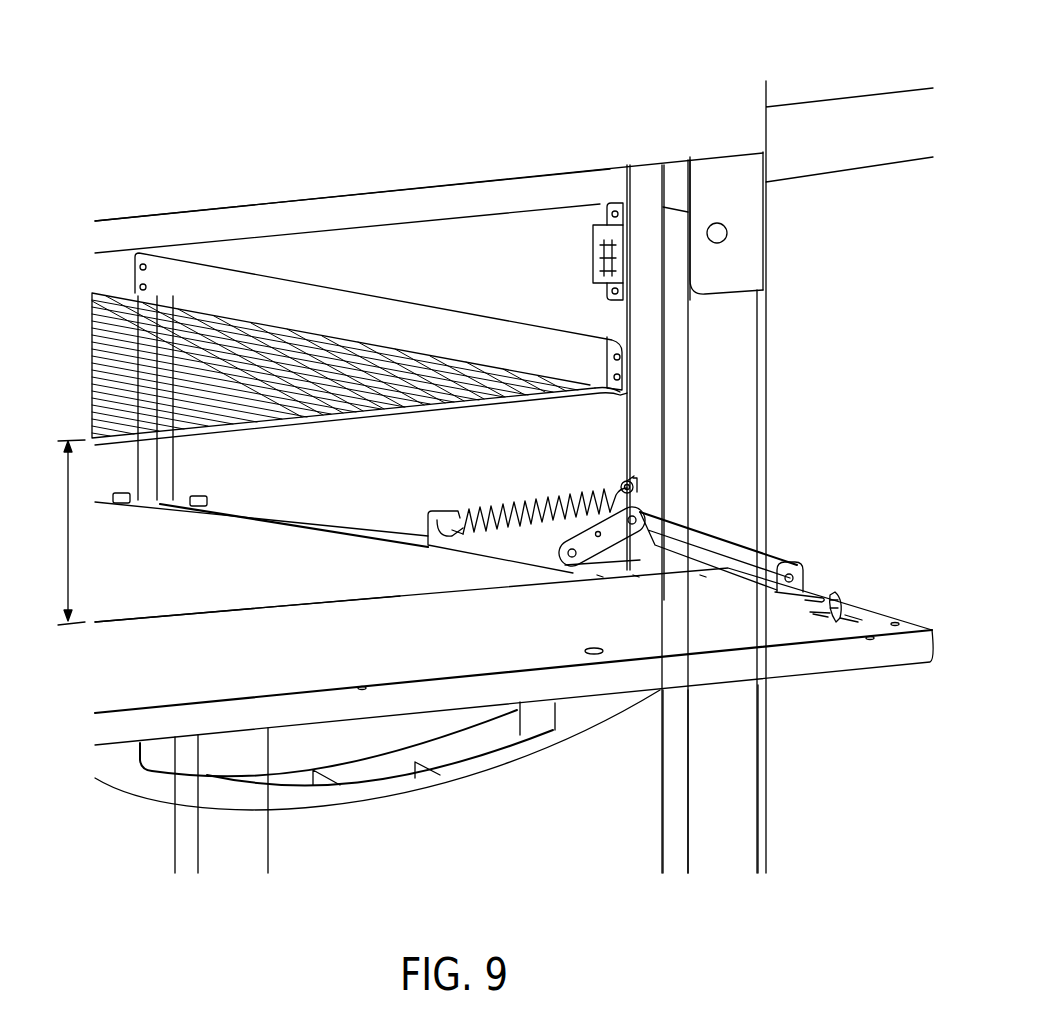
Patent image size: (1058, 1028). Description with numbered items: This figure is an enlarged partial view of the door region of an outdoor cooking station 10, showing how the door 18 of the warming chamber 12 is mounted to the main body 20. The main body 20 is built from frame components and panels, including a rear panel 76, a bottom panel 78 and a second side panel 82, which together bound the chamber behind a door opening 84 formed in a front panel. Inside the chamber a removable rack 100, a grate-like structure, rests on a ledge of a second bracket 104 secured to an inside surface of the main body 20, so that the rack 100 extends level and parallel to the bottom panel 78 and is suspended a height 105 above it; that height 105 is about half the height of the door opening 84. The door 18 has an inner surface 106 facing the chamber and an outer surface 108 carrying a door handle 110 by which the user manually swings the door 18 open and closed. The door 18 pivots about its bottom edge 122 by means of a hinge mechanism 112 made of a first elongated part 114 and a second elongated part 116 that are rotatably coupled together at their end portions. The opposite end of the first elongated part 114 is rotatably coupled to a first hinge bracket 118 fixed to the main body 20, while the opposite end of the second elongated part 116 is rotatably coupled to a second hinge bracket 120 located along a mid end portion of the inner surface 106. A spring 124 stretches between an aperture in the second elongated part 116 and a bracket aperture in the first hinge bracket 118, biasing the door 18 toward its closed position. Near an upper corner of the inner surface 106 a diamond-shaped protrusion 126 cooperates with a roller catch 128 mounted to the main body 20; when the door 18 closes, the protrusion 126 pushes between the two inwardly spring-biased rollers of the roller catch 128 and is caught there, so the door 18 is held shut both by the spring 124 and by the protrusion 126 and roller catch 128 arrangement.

The outdoor cooking station 10 is at (781, 52).
The warming chamber 12 is at (497, 232).
The door 18 is at (514, 718).
The main body 20 is at (764, 340).
The rear panel 76 is at (128, 480).
The bottom panel 78 is at (248, 535).
The second side panel 82 is at (323, 248).
The door opening 84 is at (670, 393).
The removable rack 100 is at (302, 432).
The second bracket 104 is at (378, 320).
The height 105 is at (62, 532).
The inner surface 106 is at (135, 617).
The outer surface 108 is at (787, 680).
The door handle 110 is at (480, 770).
The hinge mechanism 112 is at (616, 480).
The first elongated part 114 is at (553, 550).
The second elongated part 116 is at (730, 558).
The first hinge bracket 118 is at (470, 553).
The second hinge bracket 120 is at (805, 593).
The bottom edge 122 is at (255, 605).
The spring 124 is at (500, 500).
The protrusion 126 is at (846, 600).
The roller catch 128 is at (592, 264).